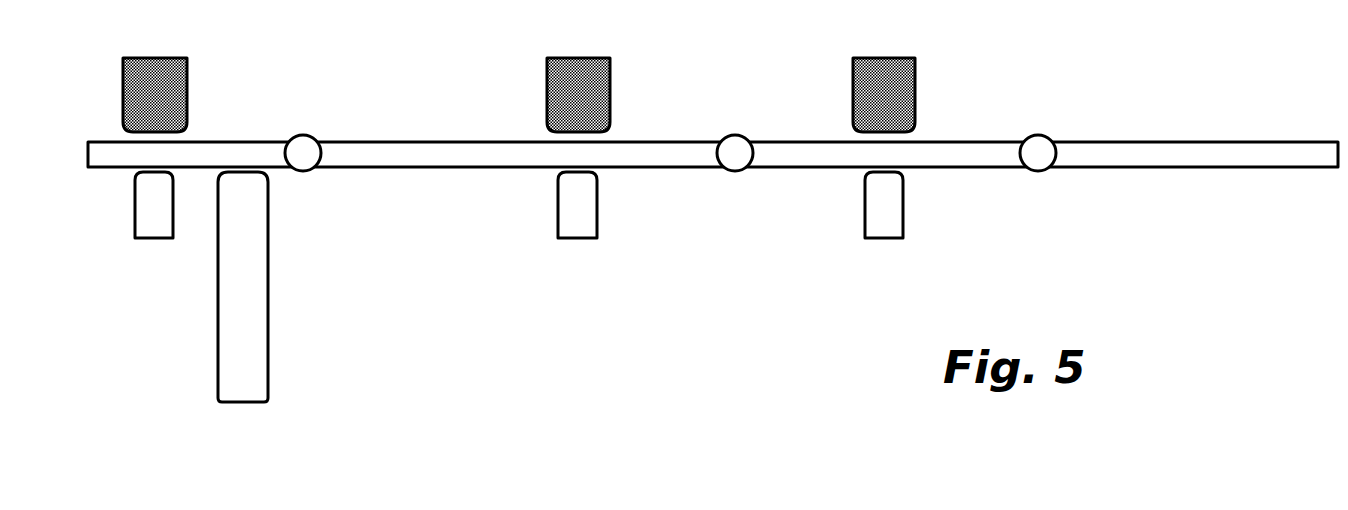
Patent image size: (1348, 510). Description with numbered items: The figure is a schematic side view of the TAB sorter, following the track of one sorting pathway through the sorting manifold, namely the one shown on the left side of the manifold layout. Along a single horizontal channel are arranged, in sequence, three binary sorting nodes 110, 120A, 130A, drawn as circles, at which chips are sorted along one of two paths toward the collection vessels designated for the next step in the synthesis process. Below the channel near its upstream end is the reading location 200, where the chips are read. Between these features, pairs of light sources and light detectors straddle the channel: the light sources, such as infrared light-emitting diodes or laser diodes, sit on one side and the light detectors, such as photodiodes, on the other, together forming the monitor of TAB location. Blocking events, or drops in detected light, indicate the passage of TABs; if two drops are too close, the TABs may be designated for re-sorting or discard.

The binary sorting node 110 is at (317, 167).
The binary sorting node 120A is at (727, 169).
The binary sorting node 130A is at (1047, 170).
The reading location 200 is at (217, 288).